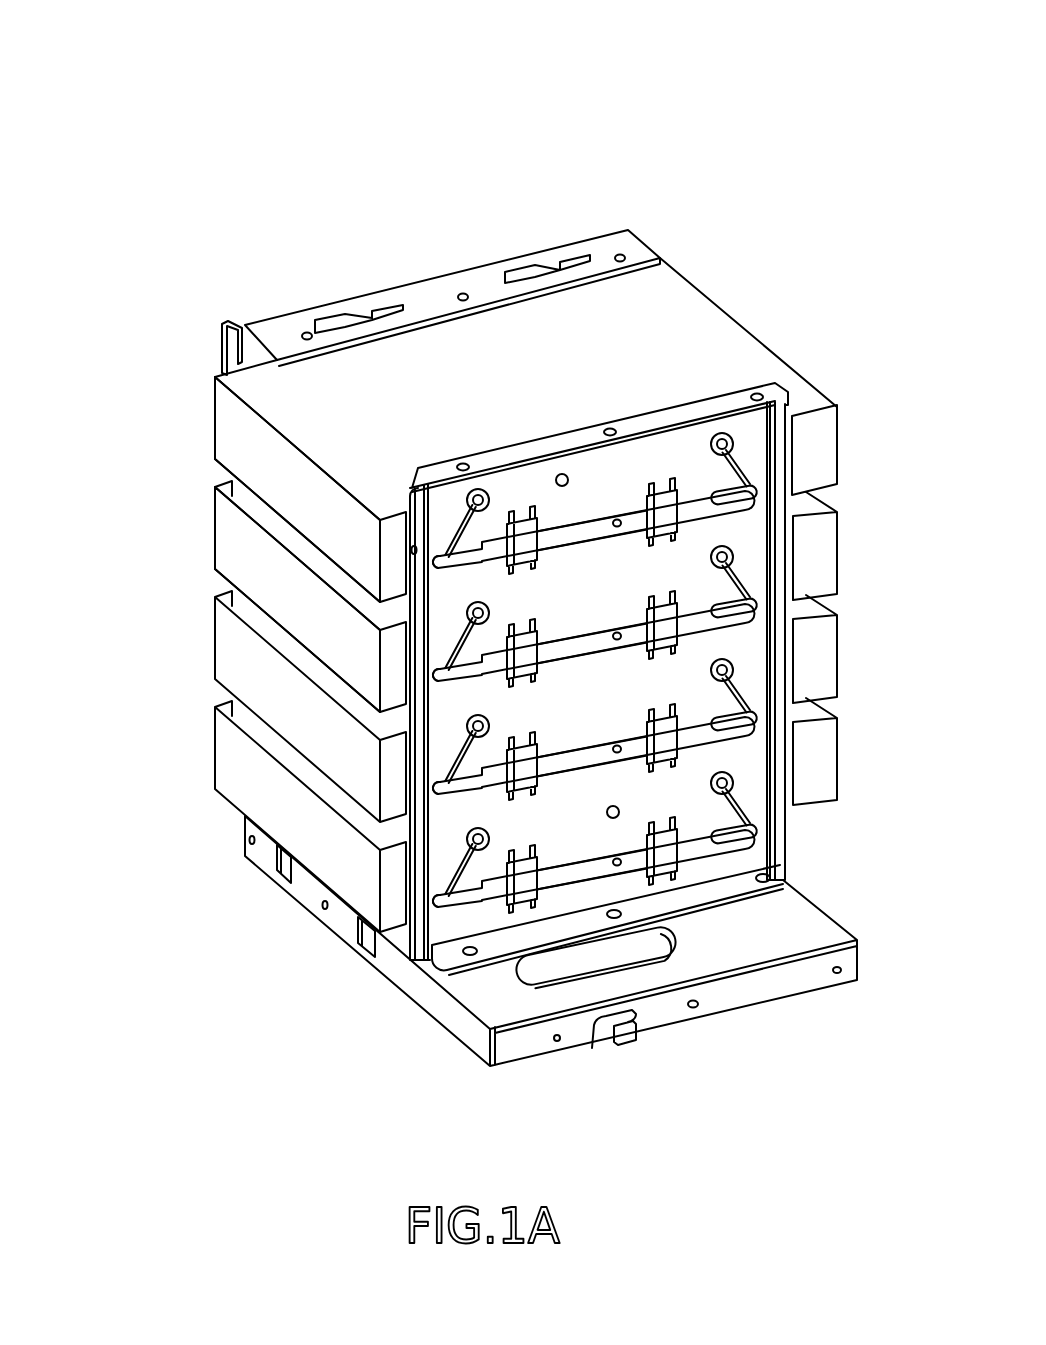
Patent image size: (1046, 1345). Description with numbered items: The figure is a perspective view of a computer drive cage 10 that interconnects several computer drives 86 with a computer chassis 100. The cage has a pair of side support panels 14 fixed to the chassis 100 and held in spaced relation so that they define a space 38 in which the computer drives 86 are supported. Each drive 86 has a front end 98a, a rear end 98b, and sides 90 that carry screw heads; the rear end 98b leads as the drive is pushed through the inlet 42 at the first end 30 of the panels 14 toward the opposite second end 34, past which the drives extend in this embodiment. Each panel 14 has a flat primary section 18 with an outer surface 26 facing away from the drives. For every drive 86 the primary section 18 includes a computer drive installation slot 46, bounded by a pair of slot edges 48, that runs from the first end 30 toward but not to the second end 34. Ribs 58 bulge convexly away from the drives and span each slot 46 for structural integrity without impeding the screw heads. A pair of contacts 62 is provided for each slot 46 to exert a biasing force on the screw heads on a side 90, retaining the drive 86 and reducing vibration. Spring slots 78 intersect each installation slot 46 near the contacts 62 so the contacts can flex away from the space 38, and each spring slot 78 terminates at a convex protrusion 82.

The computer drive cage 10 is at (629, 168).
The side support panel 14 is at (411, 290).
The primary section 18 is at (567, 596).
The outer surface 26 is at (753, 777).
The first end 30 is at (427, 652).
The second end 34 is at (790, 468).
The space 38 is at (140, 553).
The inlet 42 is at (178, 335).
The computer drive installation slot 46 is at (553, 527).
The slot edge 48 is at (587, 521).
The rib 58 is at (663, 848).
The contact 62 is at (467, 877).
The spring slot 78 is at (468, 509).
The protrusion 82 is at (723, 432).
The computer drive 86 is at (336, 444).
The side 90 is at (825, 543).
The front end 98a is at (277, 478).
The rear end 98b is at (840, 668).
The computer chassis 100 is at (700, 945).